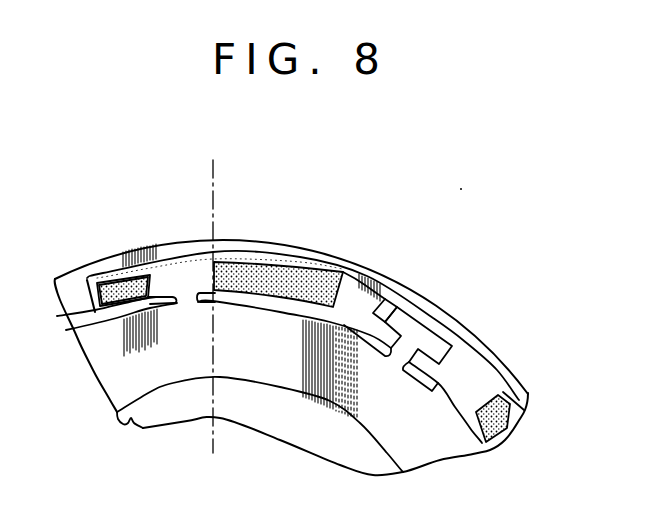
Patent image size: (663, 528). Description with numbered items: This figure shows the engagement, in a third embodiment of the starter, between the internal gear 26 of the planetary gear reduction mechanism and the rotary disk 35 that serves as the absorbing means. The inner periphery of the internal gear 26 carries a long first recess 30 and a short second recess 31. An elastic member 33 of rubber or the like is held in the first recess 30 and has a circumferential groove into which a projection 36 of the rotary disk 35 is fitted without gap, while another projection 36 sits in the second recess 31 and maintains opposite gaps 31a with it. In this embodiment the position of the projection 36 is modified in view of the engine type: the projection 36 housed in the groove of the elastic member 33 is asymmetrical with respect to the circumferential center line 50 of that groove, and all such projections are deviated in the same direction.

The internal gear 26 is at (164, 228).
The first long recess 30 is at (102, 278).
The second short recess 31 is at (392, 313).
The gap 31a is at (443, 368).
The elastic member 33 is at (299, 272).
The rotary disk 35 is at (173, 388).
The projection 36 is at (203, 278).
The circumferential center line 50 is at (218, 435).